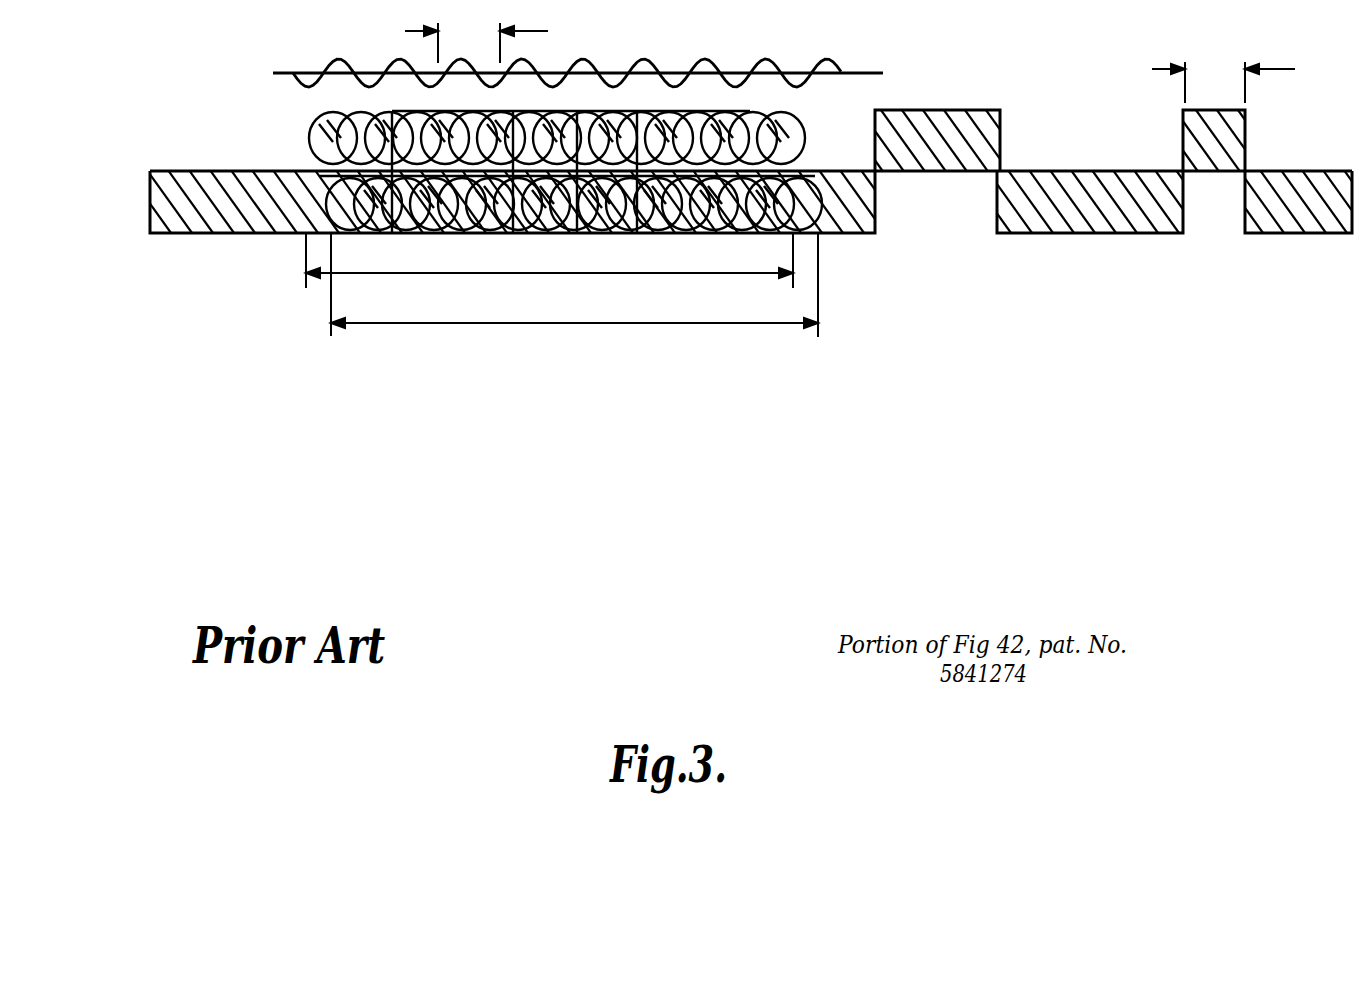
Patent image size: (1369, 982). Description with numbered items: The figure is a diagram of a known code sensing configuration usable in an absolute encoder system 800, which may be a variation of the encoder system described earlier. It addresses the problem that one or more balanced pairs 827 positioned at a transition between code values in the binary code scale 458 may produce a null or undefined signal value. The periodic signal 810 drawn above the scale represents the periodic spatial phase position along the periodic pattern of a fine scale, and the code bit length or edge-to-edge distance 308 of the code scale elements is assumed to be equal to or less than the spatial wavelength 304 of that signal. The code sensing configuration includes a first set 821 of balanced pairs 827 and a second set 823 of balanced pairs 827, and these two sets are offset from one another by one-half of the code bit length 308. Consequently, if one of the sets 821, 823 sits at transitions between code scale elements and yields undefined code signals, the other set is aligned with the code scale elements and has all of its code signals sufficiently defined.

The absolute encoder system 800 is at (709, 193).
The binary code scale 458 is at (115, 146).
The balanced pair 827 is at (310, 131).
The periodic signal 810 is at (756, 60).
The spatial wavelength 304 is at (507, 40).
The code bit length 308 is at (1253, 79).
The first set of balanced pairs 821 is at (549, 260).
The second set of balanced pairs 823 is at (574, 285).